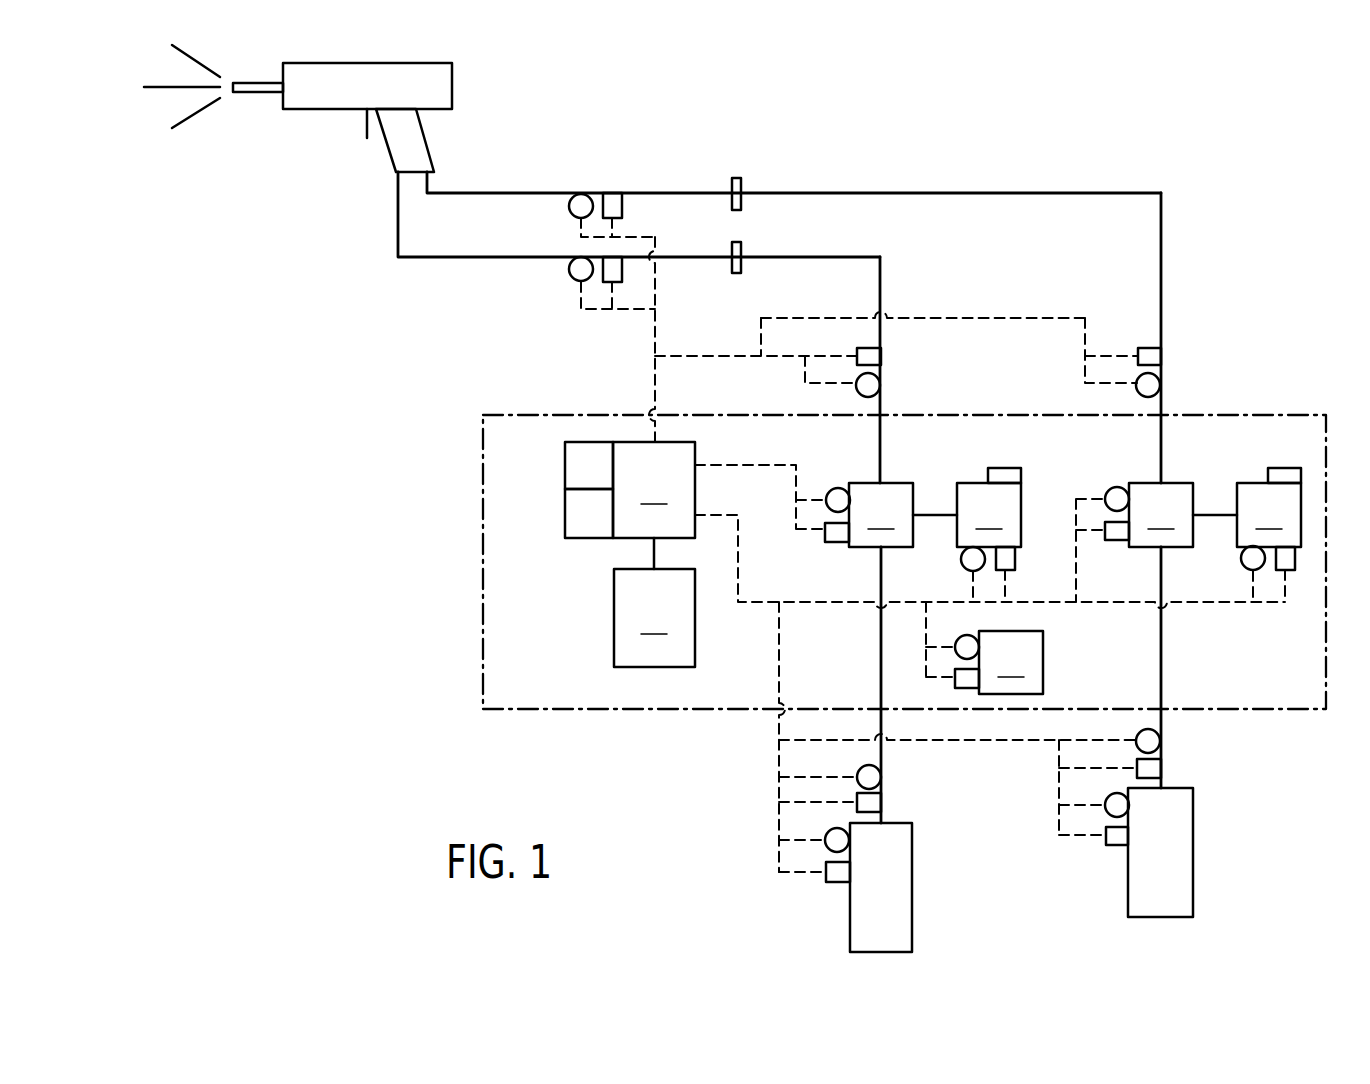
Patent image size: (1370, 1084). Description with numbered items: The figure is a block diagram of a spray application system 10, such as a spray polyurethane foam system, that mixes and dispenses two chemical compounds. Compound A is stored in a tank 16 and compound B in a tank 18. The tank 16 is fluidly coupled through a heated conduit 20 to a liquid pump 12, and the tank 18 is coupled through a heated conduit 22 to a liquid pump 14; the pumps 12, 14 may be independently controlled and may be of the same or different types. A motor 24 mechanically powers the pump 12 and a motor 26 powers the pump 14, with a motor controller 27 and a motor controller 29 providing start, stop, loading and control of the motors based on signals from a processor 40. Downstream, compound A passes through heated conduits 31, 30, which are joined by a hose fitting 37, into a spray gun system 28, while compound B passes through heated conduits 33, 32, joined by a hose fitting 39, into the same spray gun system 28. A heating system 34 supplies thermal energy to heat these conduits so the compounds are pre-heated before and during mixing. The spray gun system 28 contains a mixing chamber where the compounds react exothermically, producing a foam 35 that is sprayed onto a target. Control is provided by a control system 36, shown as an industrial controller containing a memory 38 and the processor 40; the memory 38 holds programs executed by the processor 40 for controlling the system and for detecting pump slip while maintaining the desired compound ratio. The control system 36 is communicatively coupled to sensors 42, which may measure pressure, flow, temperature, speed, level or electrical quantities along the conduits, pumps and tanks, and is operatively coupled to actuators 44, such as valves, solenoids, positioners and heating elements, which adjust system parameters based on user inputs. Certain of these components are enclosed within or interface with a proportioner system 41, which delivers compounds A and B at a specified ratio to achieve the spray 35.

The spray application system 10 is at (1273, 146).
The liquid pump 12 is at (903, 515).
The liquid pump 14 is at (1183, 515).
The tank 16 is at (912, 900).
The tank 18 is at (1193, 865).
The conduit 20 is at (881, 660).
The conduit 22 is at (1161, 668).
The motor 24 is at (989, 515).
The motor 26 is at (1269, 515).
The motor controller 27 is at (1005, 468).
The spray gun system 28 is at (452, 86).
The motor controller 29 is at (1285, 468).
The heated conduit 30 is at (455, 258).
The heated conduit 31 is at (881, 282).
The heated conduit 32 is at (485, 193).
The heated conduit 33 is at (1161, 215).
The heating system 34 is at (1011, 662).
The foam 35 is at (203, 136).
The control system 36 is at (654, 505).
The hose fitting 37 is at (737, 242).
The memory 38 is at (565, 465).
The hose fitting 39 is at (737, 178).
The processor 40 is at (565, 515).
The proportioner system 41 is at (1326, 563).
The sensor 42 is at (570, 210).
The actuator 44 is at (622, 205).